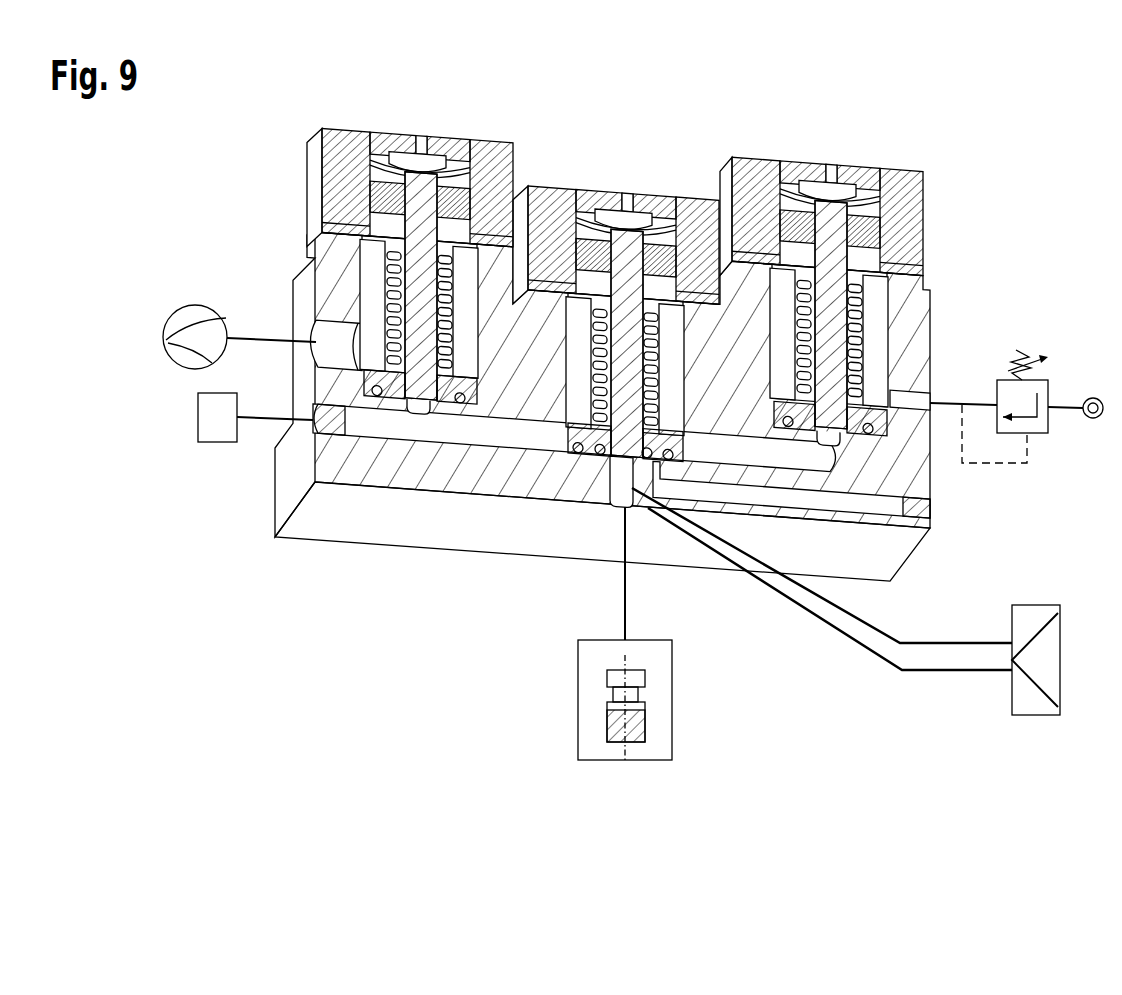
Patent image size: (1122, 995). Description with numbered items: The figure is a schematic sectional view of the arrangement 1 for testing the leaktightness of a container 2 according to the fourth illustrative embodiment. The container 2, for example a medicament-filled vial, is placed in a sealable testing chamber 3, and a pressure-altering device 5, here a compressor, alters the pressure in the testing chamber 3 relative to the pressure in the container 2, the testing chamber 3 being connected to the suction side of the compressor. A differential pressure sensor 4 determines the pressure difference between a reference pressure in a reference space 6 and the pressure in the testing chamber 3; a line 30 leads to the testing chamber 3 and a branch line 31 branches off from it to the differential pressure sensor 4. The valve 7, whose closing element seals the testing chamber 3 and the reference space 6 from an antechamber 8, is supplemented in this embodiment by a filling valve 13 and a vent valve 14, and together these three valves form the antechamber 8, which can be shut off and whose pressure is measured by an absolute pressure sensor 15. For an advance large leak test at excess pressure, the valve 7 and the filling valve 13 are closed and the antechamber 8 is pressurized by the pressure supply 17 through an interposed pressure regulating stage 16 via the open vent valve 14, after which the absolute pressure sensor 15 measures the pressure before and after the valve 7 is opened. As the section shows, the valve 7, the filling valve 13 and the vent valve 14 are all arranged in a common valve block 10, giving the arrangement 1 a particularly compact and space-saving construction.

The arrangement 1 is at (222, 170).
The container 2 is at (640, 705).
The testing chamber 3 is at (656, 694).
The differential pressure sensor 4 is at (1047, 683).
The pressure-altering device 5 is at (191, 312).
The reference space 6 is at (947, 643).
The valve 7 is at (611, 175).
The antechamber 8 is at (468, 430).
The valve block 10 is at (939, 204).
The filling valve 13 is at (411, 126).
The vent valve 14 is at (804, 148).
The absolute pressure sensor 15 is at (215, 431).
The pressure regulating stage 16 is at (1003, 390).
The pressure supply 17 is at (1098, 396).
The line 30 is at (625, 593).
The branch line 31 is at (942, 672).